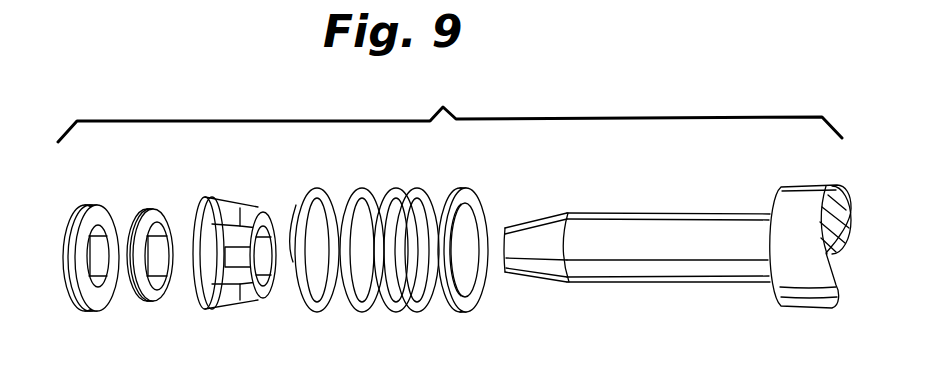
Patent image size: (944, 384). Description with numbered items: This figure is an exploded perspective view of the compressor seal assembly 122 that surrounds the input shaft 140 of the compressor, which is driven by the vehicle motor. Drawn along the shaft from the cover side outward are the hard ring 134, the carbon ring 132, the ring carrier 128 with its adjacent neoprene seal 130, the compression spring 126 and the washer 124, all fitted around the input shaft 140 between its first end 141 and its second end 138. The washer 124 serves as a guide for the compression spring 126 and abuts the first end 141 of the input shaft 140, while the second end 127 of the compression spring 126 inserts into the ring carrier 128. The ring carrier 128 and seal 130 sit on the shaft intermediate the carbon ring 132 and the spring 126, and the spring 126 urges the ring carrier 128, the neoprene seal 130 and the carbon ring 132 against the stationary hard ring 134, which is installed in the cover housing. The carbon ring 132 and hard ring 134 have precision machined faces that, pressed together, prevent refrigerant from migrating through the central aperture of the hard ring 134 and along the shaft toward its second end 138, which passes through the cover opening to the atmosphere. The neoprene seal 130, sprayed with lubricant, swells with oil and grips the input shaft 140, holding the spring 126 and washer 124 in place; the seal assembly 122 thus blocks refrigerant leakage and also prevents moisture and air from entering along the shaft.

The compressor seal assembly 122 is at (443, 107).
The washer 124 is at (477, 305).
The compression spring 126 is at (408, 308).
The second end of compression spring 127 is at (294, 197).
The ring carrier 128 is at (262, 287).
The neoprene seal 130 is at (266, 283).
The carbon ring 132 is at (157, 300).
The hard ring 134 is at (102, 308).
The second end of input shaft 138 is at (503, 230).
The input shaft 140 is at (668, 277).
The first end of input shaft 141 is at (744, 213).